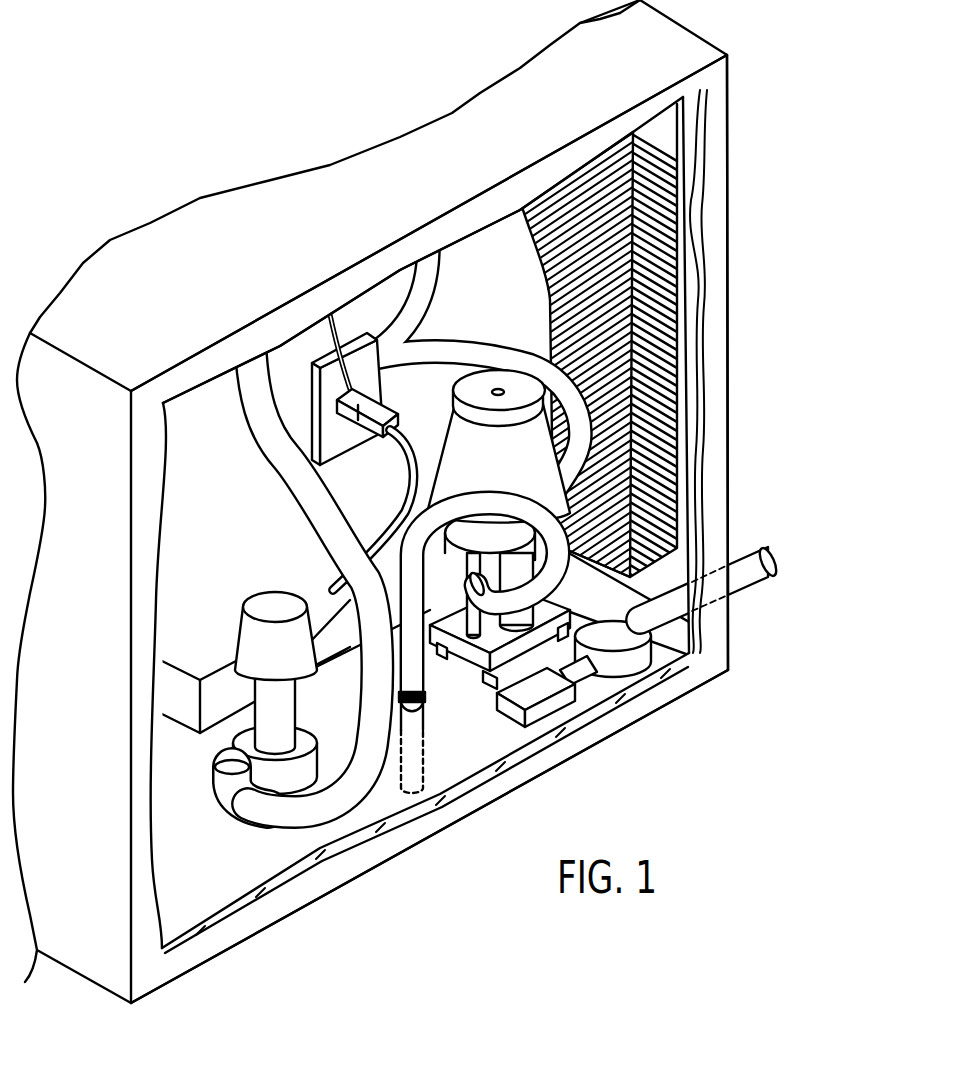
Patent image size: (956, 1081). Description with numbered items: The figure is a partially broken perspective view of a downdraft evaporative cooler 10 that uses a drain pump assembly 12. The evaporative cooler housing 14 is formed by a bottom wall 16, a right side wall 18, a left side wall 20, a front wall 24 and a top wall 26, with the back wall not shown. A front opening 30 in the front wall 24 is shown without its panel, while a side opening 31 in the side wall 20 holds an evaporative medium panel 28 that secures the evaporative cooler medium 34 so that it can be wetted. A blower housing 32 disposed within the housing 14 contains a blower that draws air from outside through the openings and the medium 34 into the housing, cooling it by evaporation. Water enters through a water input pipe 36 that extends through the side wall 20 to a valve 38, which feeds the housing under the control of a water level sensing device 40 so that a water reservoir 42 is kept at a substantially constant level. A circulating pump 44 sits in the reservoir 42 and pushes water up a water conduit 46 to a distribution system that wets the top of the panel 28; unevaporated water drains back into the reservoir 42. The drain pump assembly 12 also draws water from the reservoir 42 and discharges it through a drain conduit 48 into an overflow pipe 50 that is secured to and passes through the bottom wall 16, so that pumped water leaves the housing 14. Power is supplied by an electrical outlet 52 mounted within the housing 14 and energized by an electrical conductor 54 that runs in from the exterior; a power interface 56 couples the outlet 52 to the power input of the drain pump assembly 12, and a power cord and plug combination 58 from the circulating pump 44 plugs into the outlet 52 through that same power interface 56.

The evaporative cooler 10 is at (768, 175).
The drain pump assembly 12 is at (506, 378).
The evaporative cooler housing 14 is at (90, 277).
The bottom wall 16 is at (403, 855).
The right side wall 18 is at (87, 728).
The left side wall 20 is at (730, 100).
The front wall 24 is at (225, 378).
The top wall 26 is at (280, 231).
The evaporative medium panel 28 is at (610, 560).
The front opening 30 is at (157, 920).
The side opening 31 is at (660, 553).
The blower housing 32 is at (388, 292).
The evaporative cooler medium 34 is at (655, 317).
The water input pipe 36 is at (753, 583).
The valve 38 is at (628, 660).
The water level sensing device 40 is at (543, 692).
The water reservoir 42 is at (447, 770).
The circulating pump 44 is at (246, 637).
The water conduit 46 is at (273, 448).
The drain conduit 48 is at (423, 672).
The overflow pipe 50 is at (424, 717).
The electrical outlet 52 is at (313, 365).
The electrical conductor 54 is at (425, 264).
The power interface 56 is at (352, 393).
The power cord and plug combination 58 is at (392, 530).